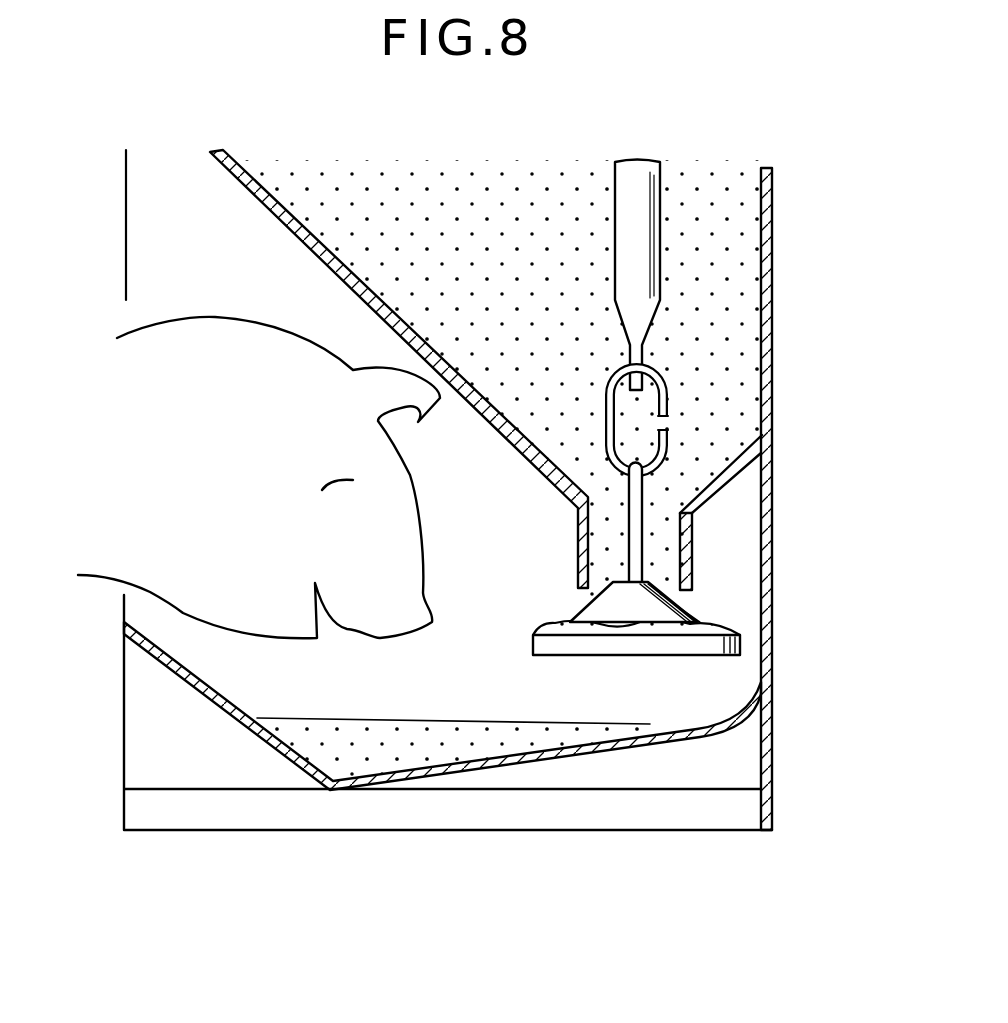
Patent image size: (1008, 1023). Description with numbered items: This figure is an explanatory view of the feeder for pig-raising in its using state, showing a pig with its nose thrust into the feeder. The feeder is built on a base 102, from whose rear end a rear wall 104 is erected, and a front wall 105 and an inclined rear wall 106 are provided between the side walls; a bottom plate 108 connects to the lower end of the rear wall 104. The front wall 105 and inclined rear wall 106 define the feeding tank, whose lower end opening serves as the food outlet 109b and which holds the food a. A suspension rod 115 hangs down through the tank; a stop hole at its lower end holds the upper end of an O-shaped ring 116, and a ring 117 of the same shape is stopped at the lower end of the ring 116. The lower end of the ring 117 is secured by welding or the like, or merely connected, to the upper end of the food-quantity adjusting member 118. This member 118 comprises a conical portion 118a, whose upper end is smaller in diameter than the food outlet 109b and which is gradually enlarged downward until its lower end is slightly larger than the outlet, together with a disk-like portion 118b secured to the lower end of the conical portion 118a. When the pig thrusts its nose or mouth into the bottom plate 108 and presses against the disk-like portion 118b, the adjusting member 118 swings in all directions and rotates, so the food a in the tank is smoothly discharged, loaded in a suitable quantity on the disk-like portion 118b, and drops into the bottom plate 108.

The food a is at (455, 178).
The base 102 is at (341, 829).
The rear wall 104 is at (772, 290).
The front wall 105 is at (288, 230).
The inclined rear wall 106 is at (735, 476).
The bottom plate 108 is at (567, 742).
The food outlet 109b is at (688, 592).
The suspension rod 115 is at (657, 197).
The O-shaped ring 116 is at (668, 400).
The ring 117 is at (645, 550).
The food-quantity adjusting member 118 is at (689, 614).
The conical portion 118a is at (584, 608).
The disk-like portion 118b is at (597, 646).